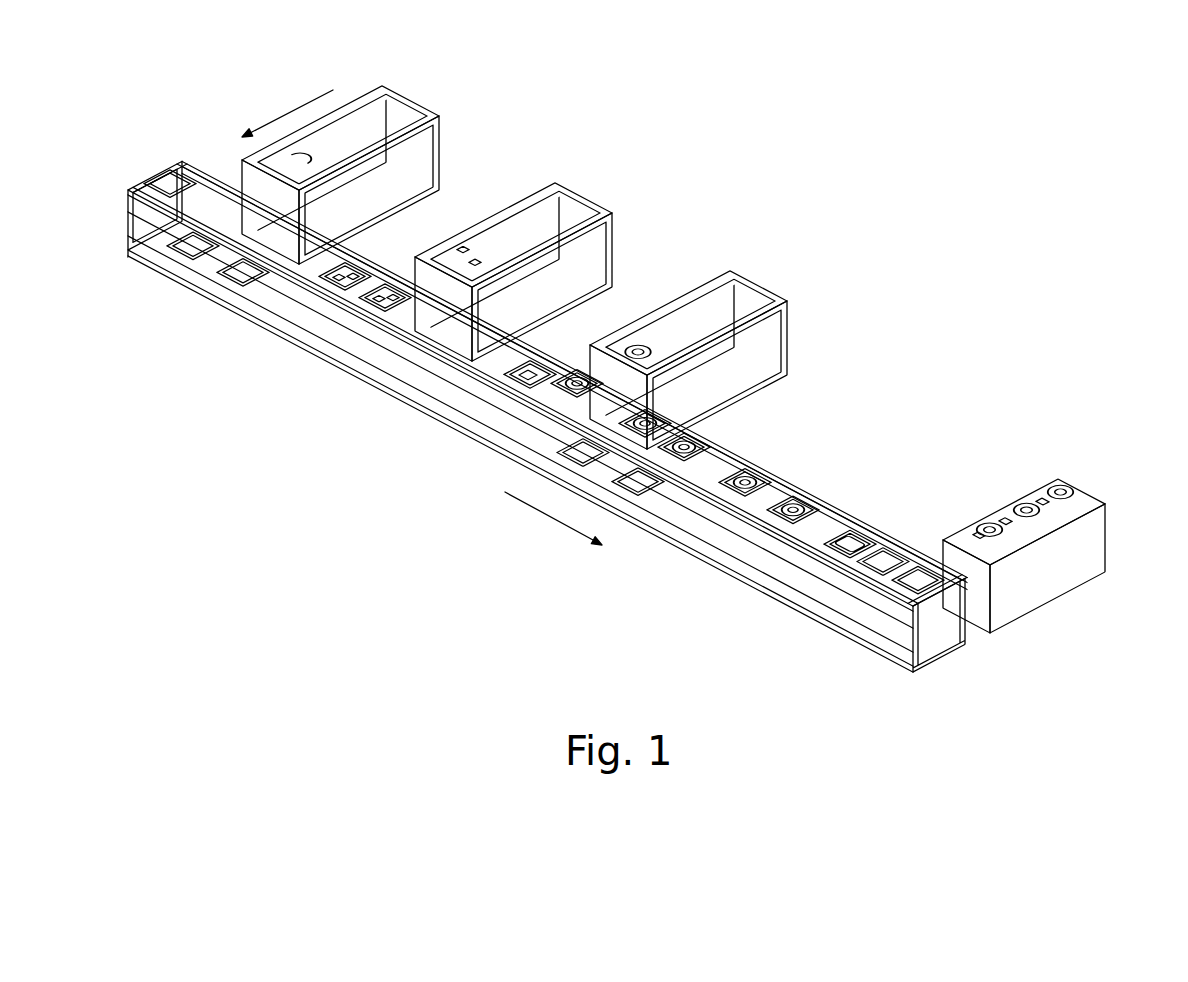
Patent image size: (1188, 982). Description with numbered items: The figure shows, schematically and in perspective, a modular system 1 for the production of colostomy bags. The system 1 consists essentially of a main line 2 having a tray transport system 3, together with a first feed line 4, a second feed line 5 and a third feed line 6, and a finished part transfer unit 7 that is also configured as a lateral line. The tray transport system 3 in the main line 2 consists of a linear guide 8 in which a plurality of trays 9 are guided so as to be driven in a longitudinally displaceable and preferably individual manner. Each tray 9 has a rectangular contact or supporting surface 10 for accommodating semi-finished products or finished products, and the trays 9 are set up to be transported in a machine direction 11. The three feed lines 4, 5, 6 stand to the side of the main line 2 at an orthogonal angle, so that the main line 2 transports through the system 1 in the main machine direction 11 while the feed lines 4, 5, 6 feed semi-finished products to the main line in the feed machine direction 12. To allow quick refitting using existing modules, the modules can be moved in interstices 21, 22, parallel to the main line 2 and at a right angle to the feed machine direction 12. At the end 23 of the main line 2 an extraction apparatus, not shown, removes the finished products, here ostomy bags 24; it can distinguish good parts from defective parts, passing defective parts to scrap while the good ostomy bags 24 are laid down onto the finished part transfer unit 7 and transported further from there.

The system 1 is at (781, 230).
The main line 2 is at (944, 682).
The tray transport system 3 is at (752, 500).
The first feed line 4 is at (452, 152).
The second feed line 5 is at (630, 204).
The third feed line 6 is at (802, 292).
The finished part transfer unit 7 is at (1108, 488).
The linear guide 8 is at (500, 348).
The tray 9 is at (327, 290).
The supporting surface 10 is at (367, 303).
The machine direction 11 is at (548, 520).
The feed machine direction 12 is at (279, 120).
The interstice 21 is at (437, 225).
The interstice 22 is at (610, 318).
The end of the main line 23 is at (940, 525).
The ostomy bag 24 is at (990, 520).